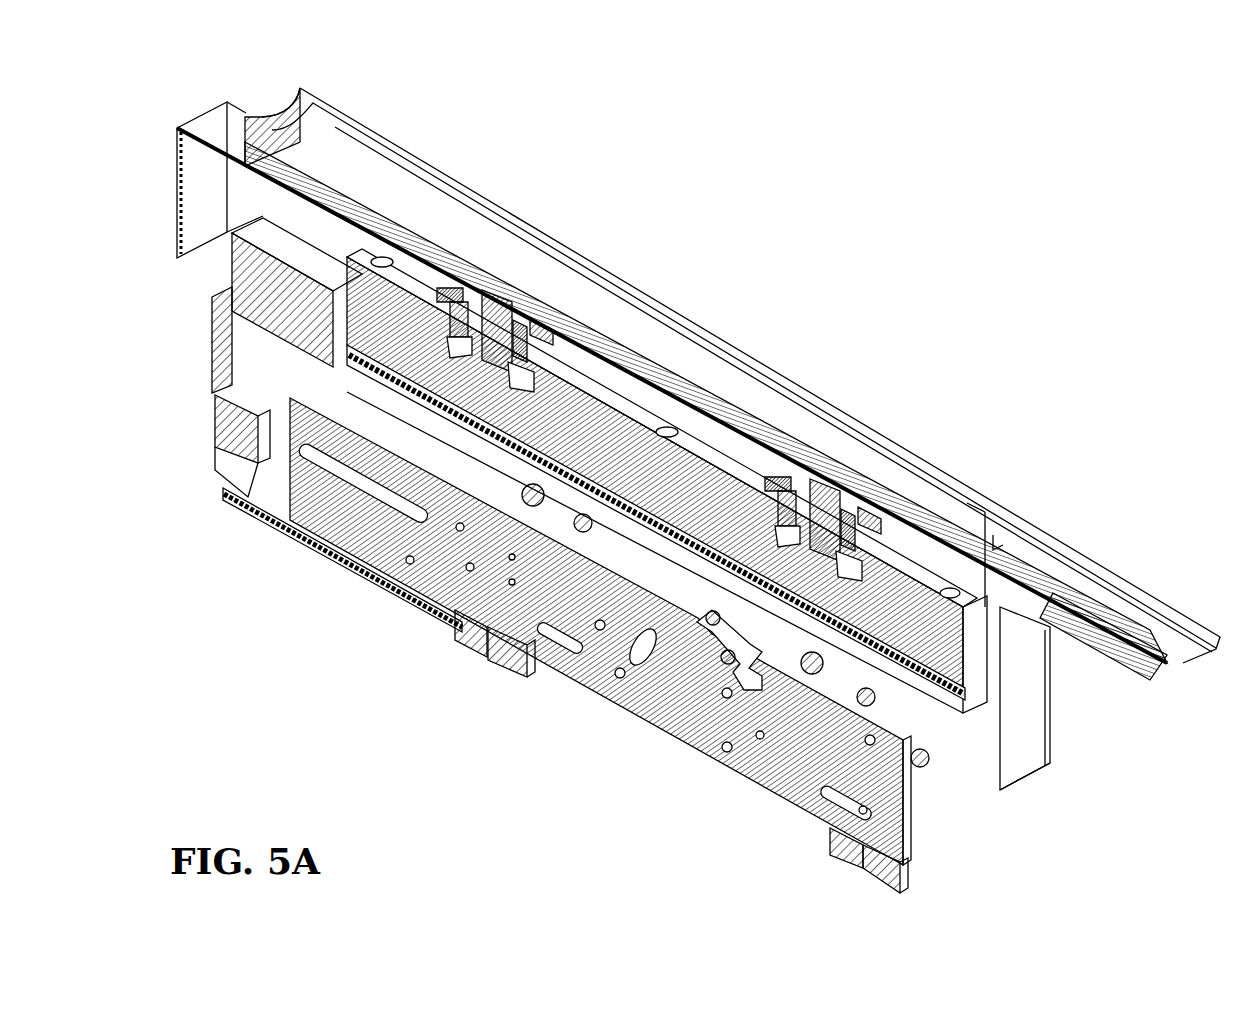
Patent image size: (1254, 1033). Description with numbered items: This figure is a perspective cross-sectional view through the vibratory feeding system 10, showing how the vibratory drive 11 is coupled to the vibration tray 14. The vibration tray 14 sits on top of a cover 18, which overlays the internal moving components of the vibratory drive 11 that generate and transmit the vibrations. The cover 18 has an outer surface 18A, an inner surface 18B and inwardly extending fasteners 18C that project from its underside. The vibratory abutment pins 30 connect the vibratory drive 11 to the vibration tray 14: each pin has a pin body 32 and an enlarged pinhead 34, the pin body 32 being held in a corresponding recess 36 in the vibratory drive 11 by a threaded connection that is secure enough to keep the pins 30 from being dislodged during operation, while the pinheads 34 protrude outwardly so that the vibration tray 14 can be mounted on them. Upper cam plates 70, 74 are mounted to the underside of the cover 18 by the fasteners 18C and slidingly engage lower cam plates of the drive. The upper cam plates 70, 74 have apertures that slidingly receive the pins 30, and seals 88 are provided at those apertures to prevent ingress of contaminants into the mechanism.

The vibratory feeding system 10 is at (925, 227).
The vibratory drive 11 is at (930, 657).
The vibration tray 14 is at (285, 133).
The cover 18 is at (1028, 763).
The outer surface 18A is at (1033, 706).
The inner surface 18B is at (242, 185).
The inwardly extending fasteners 18C is at (470, 300).
The vibratory abutment pins 30 is at (452, 402).
The pin bodies 32 is at (497, 382).
The enlarged pinheads 34 is at (512, 330).
The recess 36 is at (488, 380).
The upper cam plate 70 is at (432, 290).
The upper cam plate 74 is at (763, 478).
The seals 88 is at (545, 350).